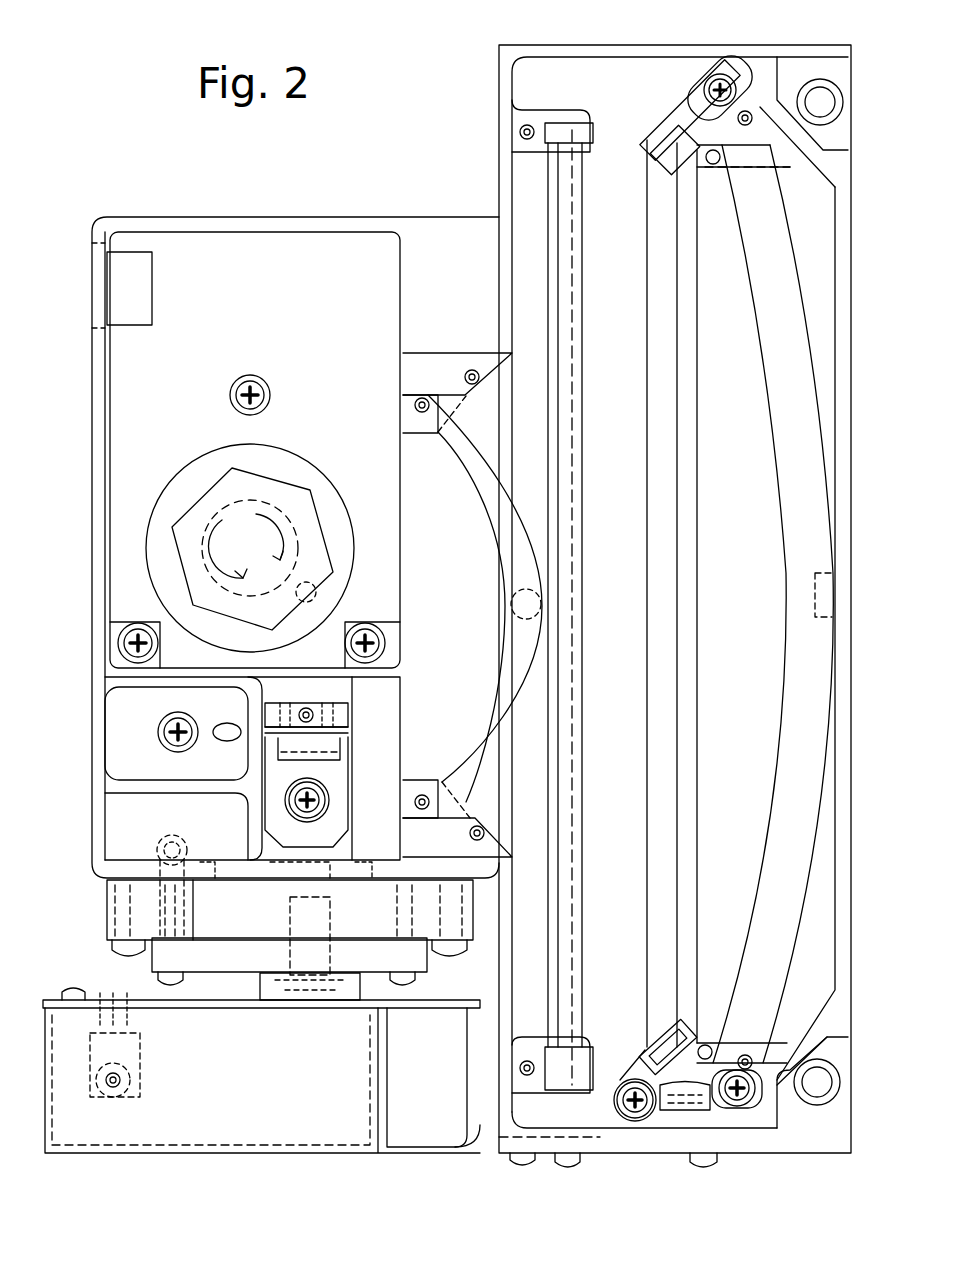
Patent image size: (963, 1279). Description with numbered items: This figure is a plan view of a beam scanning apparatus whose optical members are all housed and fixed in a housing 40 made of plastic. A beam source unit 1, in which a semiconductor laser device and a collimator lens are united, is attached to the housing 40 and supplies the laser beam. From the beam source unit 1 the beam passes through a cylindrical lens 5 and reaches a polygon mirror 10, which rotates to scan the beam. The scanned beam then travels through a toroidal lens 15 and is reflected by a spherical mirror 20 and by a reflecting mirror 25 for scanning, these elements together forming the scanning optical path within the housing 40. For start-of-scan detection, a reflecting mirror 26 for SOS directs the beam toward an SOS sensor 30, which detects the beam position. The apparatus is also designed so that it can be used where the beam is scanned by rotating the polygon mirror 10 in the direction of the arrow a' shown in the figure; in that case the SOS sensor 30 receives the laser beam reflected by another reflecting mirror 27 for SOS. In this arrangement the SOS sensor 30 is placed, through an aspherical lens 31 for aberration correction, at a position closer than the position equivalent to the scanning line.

The beam source unit 1 is at (282, 1030).
The cylindrical lens 5 is at (340, 746).
The polygon mirror 10 is at (278, 475).
The toroidal lens 15 is at (483, 500).
The spherical mirror 20 is at (777, 432).
The reflecting mirror for scanning 25 is at (582, 405).
The reflecting mirror for SOS 26 is at (660, 170).
The another reflecting mirror for SOS 27 is at (700, 1030).
The SOS sensor 30 is at (690, 1110).
The aspherical lens for aberration correction 31 is at (735, 1060).
The housing 40 is at (92, 436).